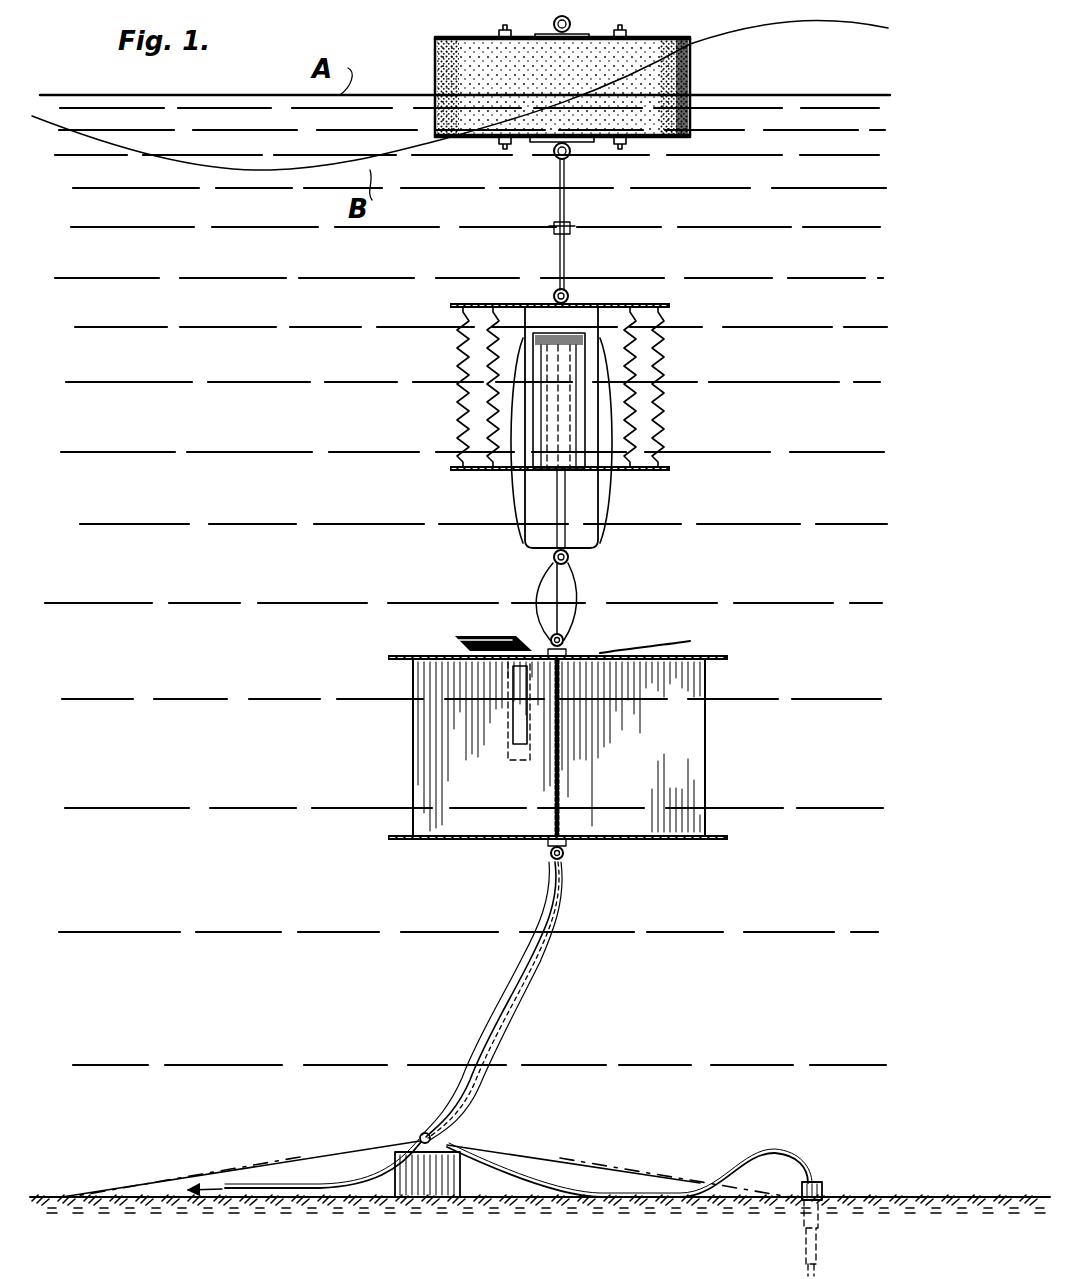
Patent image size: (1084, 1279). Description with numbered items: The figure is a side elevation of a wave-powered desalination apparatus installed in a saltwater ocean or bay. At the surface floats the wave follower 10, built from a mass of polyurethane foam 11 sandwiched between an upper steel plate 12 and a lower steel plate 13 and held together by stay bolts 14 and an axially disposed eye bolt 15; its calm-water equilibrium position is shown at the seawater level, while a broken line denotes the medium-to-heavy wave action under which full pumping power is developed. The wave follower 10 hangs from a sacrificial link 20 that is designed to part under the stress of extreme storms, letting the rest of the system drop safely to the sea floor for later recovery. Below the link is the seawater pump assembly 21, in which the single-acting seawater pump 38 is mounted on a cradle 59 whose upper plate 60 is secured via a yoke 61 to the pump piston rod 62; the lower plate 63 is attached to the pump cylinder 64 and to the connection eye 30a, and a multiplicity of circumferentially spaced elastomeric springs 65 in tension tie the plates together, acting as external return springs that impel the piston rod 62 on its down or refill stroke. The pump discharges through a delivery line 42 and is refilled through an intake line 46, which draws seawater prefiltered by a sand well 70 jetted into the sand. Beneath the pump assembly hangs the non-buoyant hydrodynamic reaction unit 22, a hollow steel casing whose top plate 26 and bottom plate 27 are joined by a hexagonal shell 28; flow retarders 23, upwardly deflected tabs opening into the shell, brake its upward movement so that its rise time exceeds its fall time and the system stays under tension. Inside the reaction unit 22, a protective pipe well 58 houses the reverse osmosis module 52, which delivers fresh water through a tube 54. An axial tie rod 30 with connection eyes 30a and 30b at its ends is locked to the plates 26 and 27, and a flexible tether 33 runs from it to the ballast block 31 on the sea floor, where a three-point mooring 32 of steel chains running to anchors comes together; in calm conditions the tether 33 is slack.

The wave follower 10 is at (694, 72).
The polyurethane foam 11 is at (436, 68).
The upper steel plate 12 is at (452, 22).
The lower steel plate 13 is at (446, 136).
The stay bolts 14 is at (508, 29).
The eye bolt 15 is at (572, 22).
The sacrificial link 20 is at (570, 226).
The seawater pump assembly 21 is at (571, 406).
The hydrodynamic reaction unit 22 is at (574, 736).
The flow retarders 23 is at (472, 635).
The top plate 26 is at (704, 656).
The bottom plate 27 is at (700, 840).
The hexagonal shell 28 is at (670, 702).
The axial tie rod 30 is at (565, 797).
The connection eye 30a is at (563, 640).
The connection eye 30b is at (562, 856).
The ballast block 31 is at (440, 1196).
The three-point mooring 32 is at (265, 1163).
The flexible tether 33 is at (495, 1050).
The seawater pump 38 is at (547, 438).
The delivery line 42 is at (512, 490).
The intake line 46 is at (575, 588).
The reverse osmosis module 52 is at (515, 738).
The tube 54 is at (340, 1185).
The protective pipe well 58 is at (512, 700).
The cradle 59 is at (606, 322).
The upper plate 60 is at (522, 303).
The yoke 61 is at (606, 388).
The pump piston rod 62 is at (565, 497).
The lower plate 63 is at (668, 470).
The pump cylinder 64 is at (555, 395).
The elastomeric springs 65 is at (462, 350).
The sand well 70 is at (824, 1190).